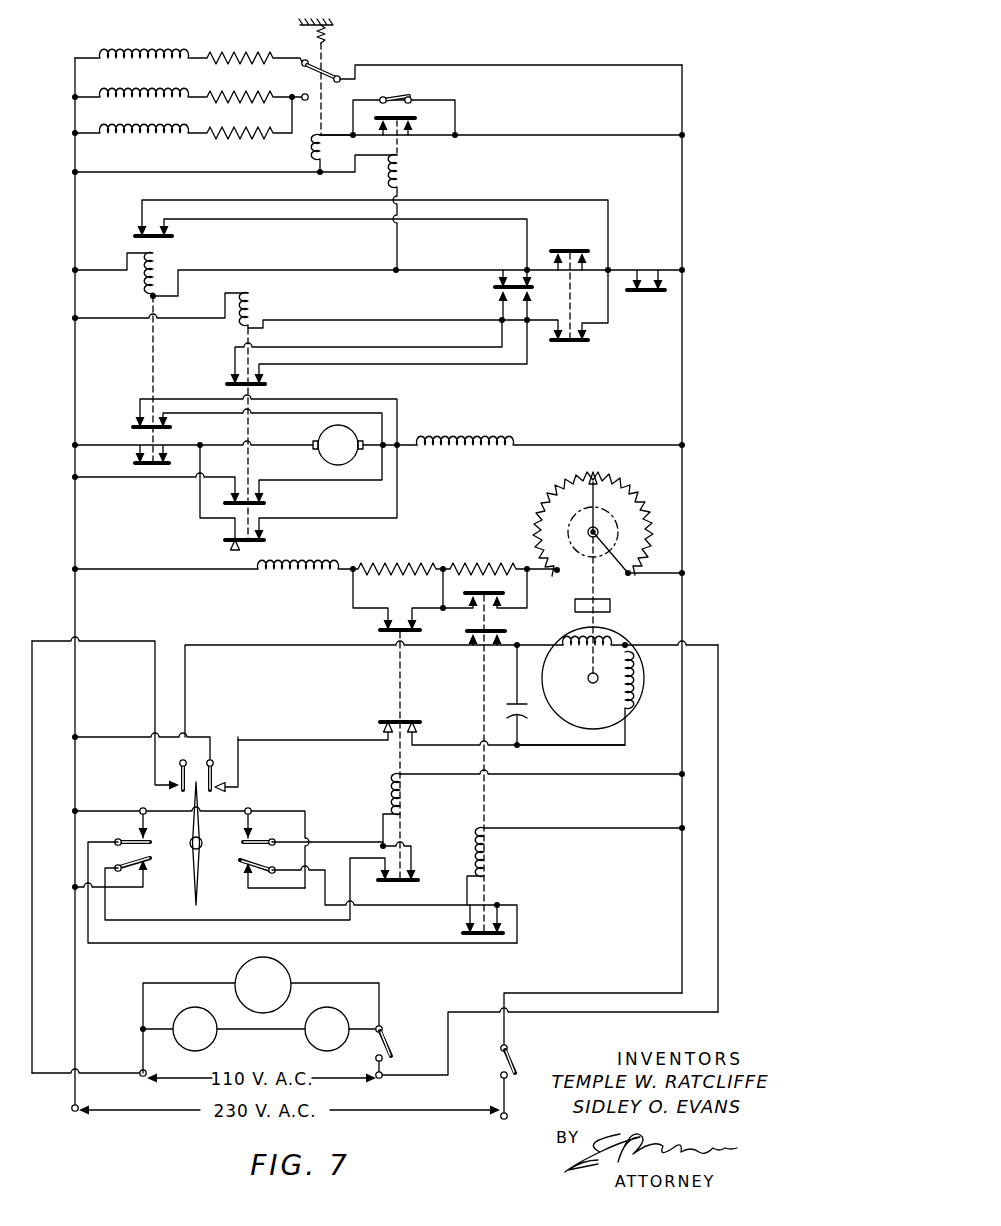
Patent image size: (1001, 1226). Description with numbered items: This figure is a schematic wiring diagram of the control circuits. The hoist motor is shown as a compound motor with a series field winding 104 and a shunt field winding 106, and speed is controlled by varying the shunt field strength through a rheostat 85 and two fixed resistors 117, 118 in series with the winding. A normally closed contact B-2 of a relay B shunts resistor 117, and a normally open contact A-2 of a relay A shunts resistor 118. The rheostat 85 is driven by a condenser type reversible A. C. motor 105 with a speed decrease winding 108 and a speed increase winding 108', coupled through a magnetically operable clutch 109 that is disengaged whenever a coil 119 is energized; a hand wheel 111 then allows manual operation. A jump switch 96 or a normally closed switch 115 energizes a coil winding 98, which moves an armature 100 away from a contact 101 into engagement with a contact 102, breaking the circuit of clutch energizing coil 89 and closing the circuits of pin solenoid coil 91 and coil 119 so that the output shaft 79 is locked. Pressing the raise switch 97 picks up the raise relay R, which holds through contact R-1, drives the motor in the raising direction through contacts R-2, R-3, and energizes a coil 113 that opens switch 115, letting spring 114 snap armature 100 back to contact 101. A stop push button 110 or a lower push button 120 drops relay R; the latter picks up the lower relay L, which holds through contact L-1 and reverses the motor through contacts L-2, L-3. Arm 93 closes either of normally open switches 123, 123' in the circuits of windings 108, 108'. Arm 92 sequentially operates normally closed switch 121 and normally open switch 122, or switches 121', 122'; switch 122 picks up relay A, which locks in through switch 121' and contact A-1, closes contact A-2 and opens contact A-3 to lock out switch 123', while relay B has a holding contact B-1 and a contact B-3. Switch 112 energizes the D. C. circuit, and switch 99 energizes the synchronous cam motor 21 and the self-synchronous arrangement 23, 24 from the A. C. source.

The clutch energizing coil 89 is at (188, 47).
The pin solenoid coil 91 is at (188, 85).
The coil 119 is at (183, 118).
The contact 101 is at (281, 47).
The armature 100 is at (494, 59).
The spring 114 is at (351, 74).
The contact 102 is at (288, 83).
The coil winding 98 is at (236, 155).
The shunt or jump switch 96 is at (404, 104).
The normally closed switch 115 is at (501, 131).
The coil 113 is at (425, 213).
The contact R-1 is at (175, 236).
The raise relay R is at (235, 358).
The lower relay L is at (400, 413).
The contact L-1 is at (377, 357).
The lower push button 120 is at (537, 279).
The raise switch 97 is at (572, 279).
The stop push button 110 is at (650, 266).
The contact R-3 is at (265, 467).
The contact R-2 is at (194, 457).
The contact L-2 is at (190, 493).
The contact L-3 is at (225, 498).
The series field winding 104 is at (549, 427).
The rheostat 85 is at (607, 517).
The hand wheel 111 is at (579, 532).
The shunt field winding 106 is at (215, 585).
The fixed resistor 118 is at (399, 555).
The fixed resistor 117 is at (500, 555).
The normally open contact A-2 is at (396, 724).
The normally closed contact B-2 is at (499, 751).
The contact B-3 is at (374, 679).
The speed decrease winding 108 is at (630, 671).
The speed increase winding 108' is at (602, 699).
The magnetically operable clutch 109 is at (620, 599).
The condenser type reversible A. C. motor 105 is at (536, 695).
The contact A-3 is at (431, 722).
The normally open switch 123 is at (142, 771).
The normally open switch 123' is at (259, 769).
The arm 93 is at (214, 843).
The output shaft 79 is at (185, 863).
The arm 92 is at (217, 907).
The normally open switch 122 is at (313, 817).
The normally open switch 122' is at (299, 875).
The normally closed switch 121 is at (378, 901).
The normally closed switch 121' is at (232, 889).
The relay A is at (531, 825).
The contact A-1 is at (418, 869).
The relay B is at (574, 866).
The contact B-1 is at (462, 917).
The switch 112 is at (530, 1076).
The synchronous cam motor 21 is at (263, 985).
The self-synchronous arrangement 23 is at (195, 1029).
The receiver 24 is at (327, 1029).
The switch 99 is at (400, 1047).